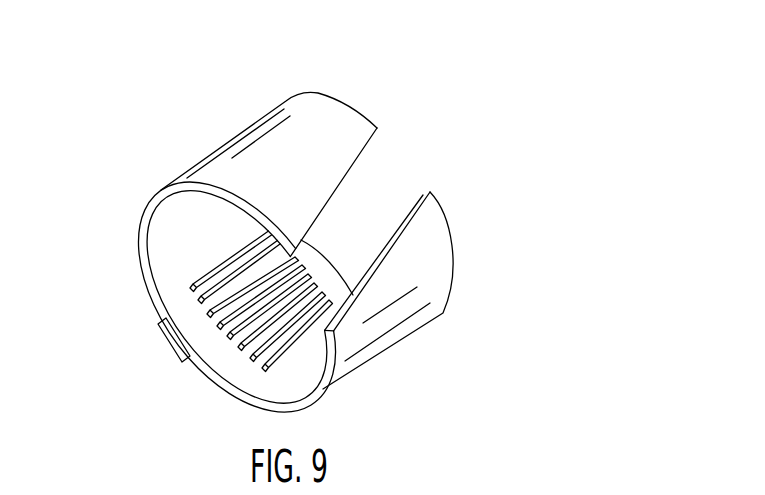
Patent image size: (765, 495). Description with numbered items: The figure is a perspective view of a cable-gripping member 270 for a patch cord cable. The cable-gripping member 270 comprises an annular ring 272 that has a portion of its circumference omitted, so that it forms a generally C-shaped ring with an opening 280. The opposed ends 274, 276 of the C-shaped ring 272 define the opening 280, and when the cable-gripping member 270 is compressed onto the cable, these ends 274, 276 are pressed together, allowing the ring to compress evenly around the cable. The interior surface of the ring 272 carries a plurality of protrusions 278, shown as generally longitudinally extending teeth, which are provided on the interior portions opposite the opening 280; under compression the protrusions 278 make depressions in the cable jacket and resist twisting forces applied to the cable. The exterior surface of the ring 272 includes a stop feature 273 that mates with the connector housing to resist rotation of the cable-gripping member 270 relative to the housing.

The cable-gripping member 270 is at (335, 251).
The annular ring 272 is at (447, 226).
The stop feature 273 is at (168, 347).
The end of the C-shaped ring 274 is at (328, 202).
The end of the C-shaped ring 276 is at (392, 233).
The protrusions 278 is at (190, 288).
The opening 280 is at (381, 160).